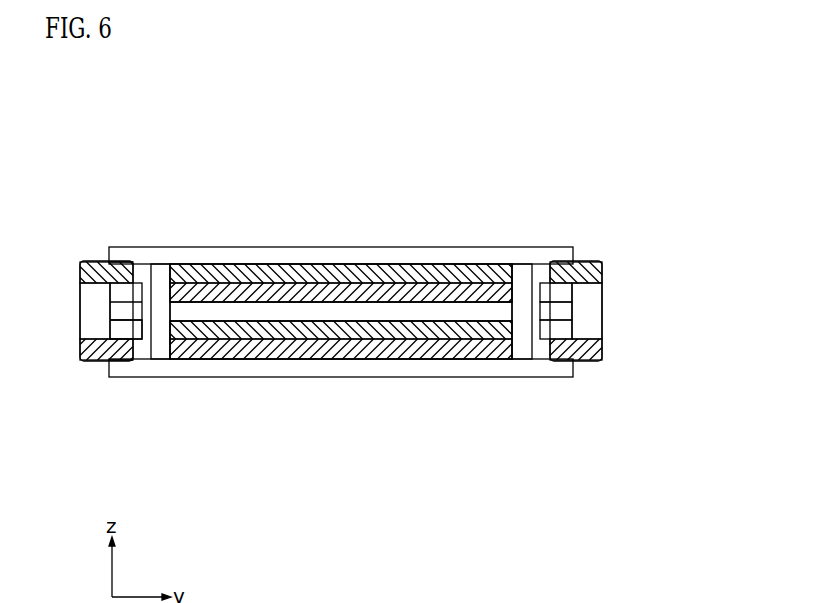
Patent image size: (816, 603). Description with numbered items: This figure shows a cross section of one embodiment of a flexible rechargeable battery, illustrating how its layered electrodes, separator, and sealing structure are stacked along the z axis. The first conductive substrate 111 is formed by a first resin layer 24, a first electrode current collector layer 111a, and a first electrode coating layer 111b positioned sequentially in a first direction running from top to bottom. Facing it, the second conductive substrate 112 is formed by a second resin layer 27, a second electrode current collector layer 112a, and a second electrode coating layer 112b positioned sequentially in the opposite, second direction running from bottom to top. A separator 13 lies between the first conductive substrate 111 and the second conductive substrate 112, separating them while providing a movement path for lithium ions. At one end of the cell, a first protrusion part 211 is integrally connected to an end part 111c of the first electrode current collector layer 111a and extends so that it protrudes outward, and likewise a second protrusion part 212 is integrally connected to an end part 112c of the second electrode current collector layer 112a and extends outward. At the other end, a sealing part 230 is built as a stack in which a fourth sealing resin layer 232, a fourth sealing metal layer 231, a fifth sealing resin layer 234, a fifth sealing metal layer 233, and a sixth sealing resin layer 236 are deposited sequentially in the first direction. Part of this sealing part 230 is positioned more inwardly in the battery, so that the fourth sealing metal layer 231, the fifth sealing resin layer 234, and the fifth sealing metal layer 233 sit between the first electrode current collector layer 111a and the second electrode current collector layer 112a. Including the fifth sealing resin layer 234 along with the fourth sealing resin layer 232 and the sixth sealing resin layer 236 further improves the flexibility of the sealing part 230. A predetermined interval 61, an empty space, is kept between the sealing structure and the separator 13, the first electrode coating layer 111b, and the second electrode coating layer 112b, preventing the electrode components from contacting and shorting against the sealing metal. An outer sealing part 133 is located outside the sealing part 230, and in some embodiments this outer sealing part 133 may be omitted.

The separator 13 is at (403, 312).
The first resin layer 24 is at (523, 250).
The second resin layer 27 is at (518, 372).
The predetermined interval 61 is at (163, 263).
The first conductive substrate 111 is at (492, 577).
The first electrode current collector layer 111a is at (266, 275).
The first electrode coating layer 111b is at (352, 290).
The end part of the first electrode current collector layer 111c is at (118, 262).
The second conductive substrate 112 is at (653, 577).
The second electrode current collector layer 112a is at (212, 350).
The second electrode coating layer 112b is at (315, 332).
The end part of the second electrode current collector layer 112c is at (117, 363).
The outer sealing part 133 is at (92, 320).
The first protrusion part 211 is at (97, 261).
The second protrusion part 212 is at (95, 362).
The sealing part 230 is at (692, 243).
The fourth sealing metal layer 231 is at (565, 296).
The fourth sealing resin layer 232 is at (540, 272).
The fifth sealing metal layer 233 is at (563, 333).
The fifth sealing resin layer 234 is at (562, 313).
The sixth sealing resin layer 236 is at (573, 354).